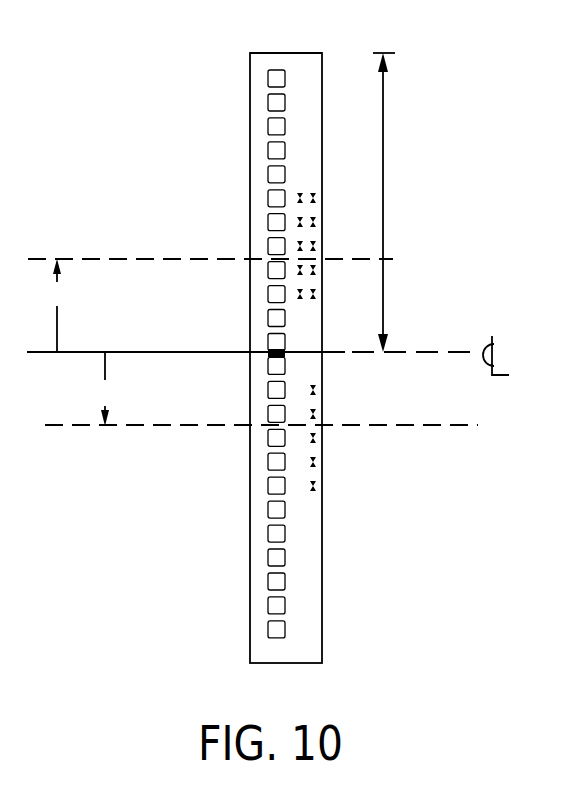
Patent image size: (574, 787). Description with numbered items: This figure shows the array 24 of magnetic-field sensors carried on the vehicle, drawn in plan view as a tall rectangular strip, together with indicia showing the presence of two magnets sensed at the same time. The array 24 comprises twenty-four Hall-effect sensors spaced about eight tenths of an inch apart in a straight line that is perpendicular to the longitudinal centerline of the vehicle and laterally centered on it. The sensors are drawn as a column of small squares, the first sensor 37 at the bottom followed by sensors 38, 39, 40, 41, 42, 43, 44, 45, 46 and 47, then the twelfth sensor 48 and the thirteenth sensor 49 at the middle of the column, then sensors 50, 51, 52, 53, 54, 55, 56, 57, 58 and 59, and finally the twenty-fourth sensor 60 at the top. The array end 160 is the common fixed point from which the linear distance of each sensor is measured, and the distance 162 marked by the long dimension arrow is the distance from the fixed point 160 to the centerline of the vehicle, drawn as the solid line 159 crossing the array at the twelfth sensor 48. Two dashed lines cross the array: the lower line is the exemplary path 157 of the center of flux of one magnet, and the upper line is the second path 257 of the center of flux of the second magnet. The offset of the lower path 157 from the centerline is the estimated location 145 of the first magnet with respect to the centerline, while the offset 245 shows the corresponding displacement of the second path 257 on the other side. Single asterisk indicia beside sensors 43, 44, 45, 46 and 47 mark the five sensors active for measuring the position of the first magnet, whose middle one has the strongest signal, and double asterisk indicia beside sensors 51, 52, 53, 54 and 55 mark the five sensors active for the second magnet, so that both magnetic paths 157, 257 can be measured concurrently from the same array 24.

The array of magnetic-field sensors 24 is at (322, 617).
The array end 160 is at (280, 53).
The distance from fixed point to vehicle centerline 162 is at (383, 170).
The second path 257 is at (388, 259).
The center line 159 is at (468, 352).
The path of center of flux 157 is at (436, 425).
The upper offset distance 245 is at (54, 305).
The location of the magnet 145 is at (105, 389).
The first sensor 37 is at (268, 629).
The Hall-effect sensor 38 is at (268, 605).
The Hall-effect sensor 39 is at (268, 582).
The Hall-effect sensor 40 is at (268, 558).
The Hall-effect sensor 41 is at (268, 534).
The Hall-effect sensor 42 is at (268, 510).
The Hall-effect sensor 43 is at (268, 486).
The Hall-effect sensor 44 is at (268, 462).
The Hall-effect sensor 45 is at (268, 438).
The Hall-effect sensor 46 is at (268, 414).
The Hall-effect sensor 47 is at (268, 390).
The twelfth sensor 48 is at (268, 366).
The thirteenth sensor 49 is at (268, 342).
The Hall-effect sensor 50 is at (268, 318).
The Hall-effect sensor 51 is at (268, 294).
The Hall-effect sensor 52 is at (268, 270).
The Hall-effect sensor 53 is at (268, 246).
The Hall-effect sensor 54 is at (268, 222).
The Hall-effect sensor 55 is at (268, 198).
The Hall-effect sensor 56 is at (268, 174).
The Hall-effect sensor 57 is at (268, 150).
The Hall-effect sensor 58 is at (268, 126).
The Hall-effect sensor 59 is at (268, 102).
The twenty-fourth sensor 60 is at (268, 78).